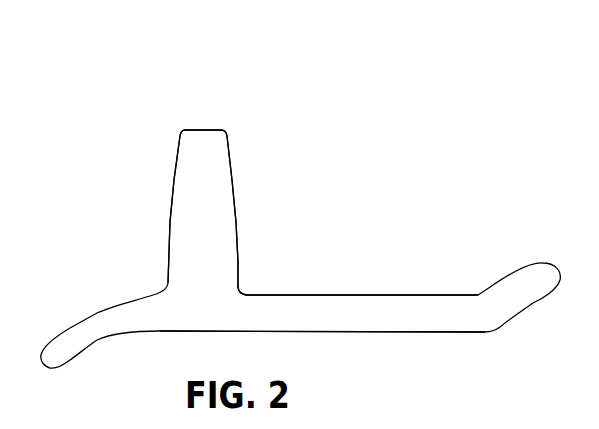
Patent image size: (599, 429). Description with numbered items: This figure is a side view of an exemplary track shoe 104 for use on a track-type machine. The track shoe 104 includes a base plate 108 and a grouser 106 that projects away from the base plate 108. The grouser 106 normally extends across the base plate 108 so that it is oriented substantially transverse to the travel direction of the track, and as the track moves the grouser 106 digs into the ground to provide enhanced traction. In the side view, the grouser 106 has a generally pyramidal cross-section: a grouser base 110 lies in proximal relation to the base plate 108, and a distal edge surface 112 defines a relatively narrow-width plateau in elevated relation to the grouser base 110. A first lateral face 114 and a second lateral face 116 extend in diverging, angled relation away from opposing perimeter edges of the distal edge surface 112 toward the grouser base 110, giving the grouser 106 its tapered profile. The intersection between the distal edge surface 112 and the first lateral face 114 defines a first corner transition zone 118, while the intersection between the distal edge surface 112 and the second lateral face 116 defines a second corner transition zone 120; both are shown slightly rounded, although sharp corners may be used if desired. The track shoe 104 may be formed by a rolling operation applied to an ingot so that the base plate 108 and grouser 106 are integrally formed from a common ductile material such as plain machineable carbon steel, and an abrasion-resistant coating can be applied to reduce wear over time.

The track shoe 104 is at (351, 198).
The grouser 106 is at (243, 263).
The base plate 108 is at (415, 292).
The grouser base 110 is at (243, 288).
The distal edge surface 112 is at (200, 127).
The first lateral face 114 is at (237, 203).
The second lateral face 116 is at (168, 222).
The first corner transition zone 118 is at (225, 128).
The second corner transition zone 120 is at (181, 128).